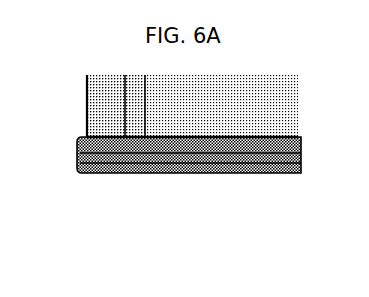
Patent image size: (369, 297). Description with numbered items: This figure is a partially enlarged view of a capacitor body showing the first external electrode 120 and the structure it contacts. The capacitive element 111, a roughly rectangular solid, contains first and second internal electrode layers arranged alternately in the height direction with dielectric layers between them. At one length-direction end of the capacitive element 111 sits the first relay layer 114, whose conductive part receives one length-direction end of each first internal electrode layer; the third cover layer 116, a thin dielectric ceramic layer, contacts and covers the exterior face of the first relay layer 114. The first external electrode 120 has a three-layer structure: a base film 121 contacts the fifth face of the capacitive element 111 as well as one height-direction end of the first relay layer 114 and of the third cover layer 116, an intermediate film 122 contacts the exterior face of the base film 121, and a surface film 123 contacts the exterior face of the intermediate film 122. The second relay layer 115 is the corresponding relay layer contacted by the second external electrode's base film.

The capacitive element 111 is at (287, 95).
The first relay layer 114 is at (135, 89).
The second relay layer 115 is at (285, 135).
The third cover layer 116 is at (100, 118).
The first external electrode 120 is at (189, 206).
The base film 121 is at (180, 147).
The intermediate film 122 is at (218, 162).
The surface film 123 is at (257, 199).